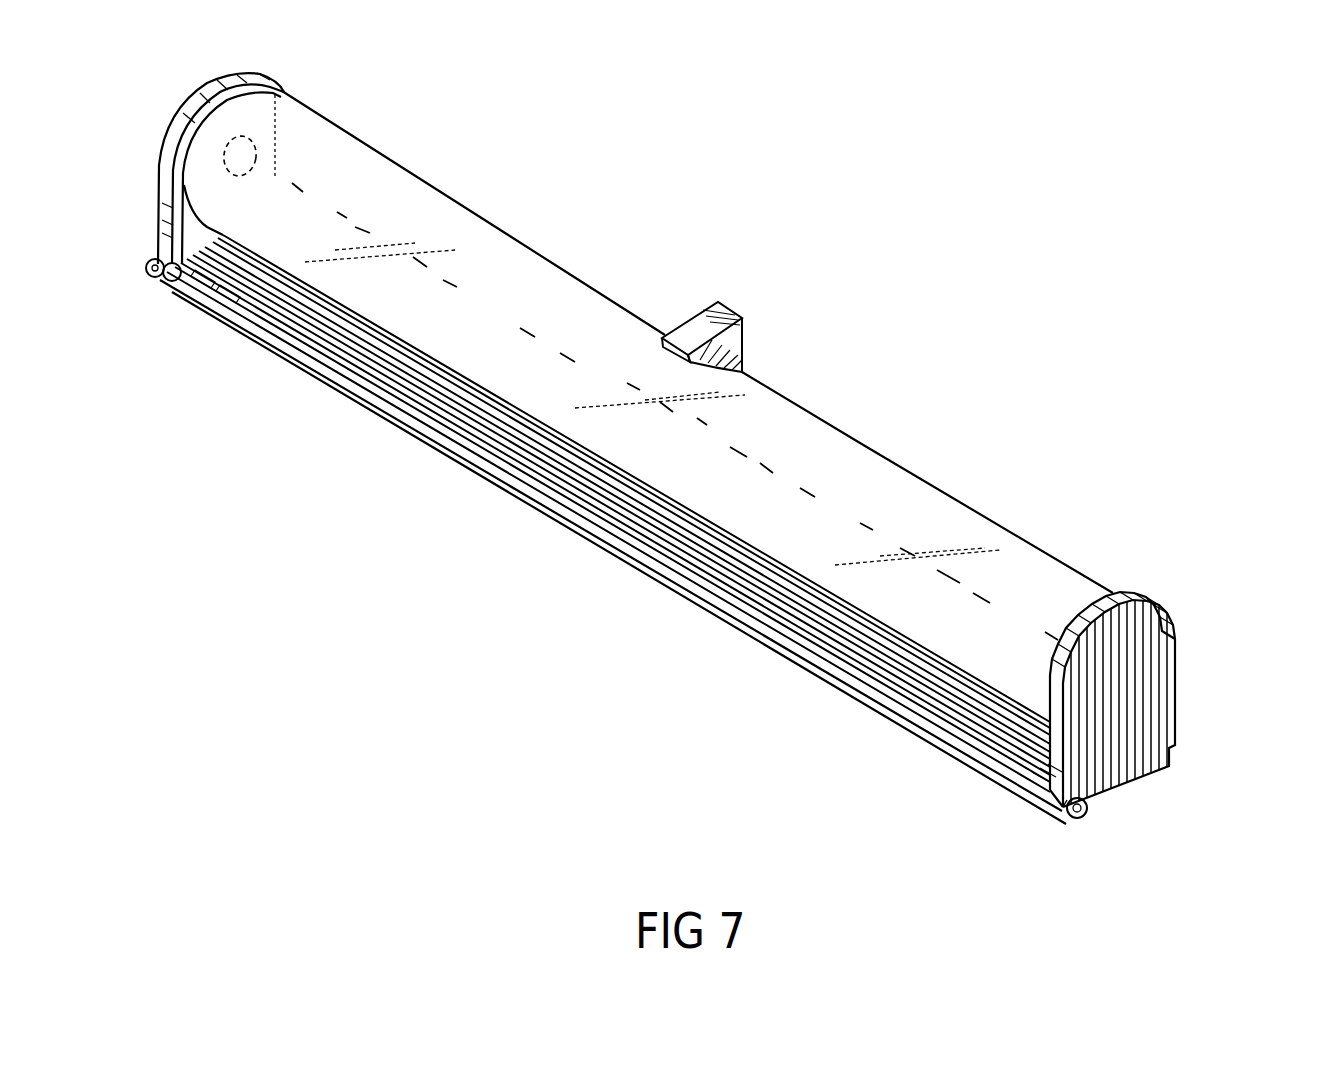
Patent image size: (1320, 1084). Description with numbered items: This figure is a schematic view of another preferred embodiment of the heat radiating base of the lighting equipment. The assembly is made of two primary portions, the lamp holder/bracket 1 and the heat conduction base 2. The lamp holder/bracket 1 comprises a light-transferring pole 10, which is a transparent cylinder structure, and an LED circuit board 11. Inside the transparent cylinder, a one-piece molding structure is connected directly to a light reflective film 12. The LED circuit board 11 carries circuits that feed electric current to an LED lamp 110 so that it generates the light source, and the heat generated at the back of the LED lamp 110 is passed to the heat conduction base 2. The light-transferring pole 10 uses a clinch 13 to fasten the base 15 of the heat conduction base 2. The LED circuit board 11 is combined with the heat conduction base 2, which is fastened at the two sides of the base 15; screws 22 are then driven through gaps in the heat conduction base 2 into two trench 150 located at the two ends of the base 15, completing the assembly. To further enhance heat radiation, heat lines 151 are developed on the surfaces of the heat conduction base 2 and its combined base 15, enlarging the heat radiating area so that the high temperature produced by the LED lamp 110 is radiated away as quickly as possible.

The lamp holder/bracket 1 is at (568, 247).
The LED lamp 110 is at (252, 152).
The light reflective film 12 is at (887, 503).
The clinch 13 is at (735, 315).
The light-transferring pole 10 is at (718, 508).
The heat lines 151 is at (487, 430).
The trench 150 is at (838, 668).
The base 15 is at (953, 760).
The LED circuit board 11 is at (1113, 595).
The heat conduction base 2 is at (1178, 695).
The screws 22 is at (1082, 815).